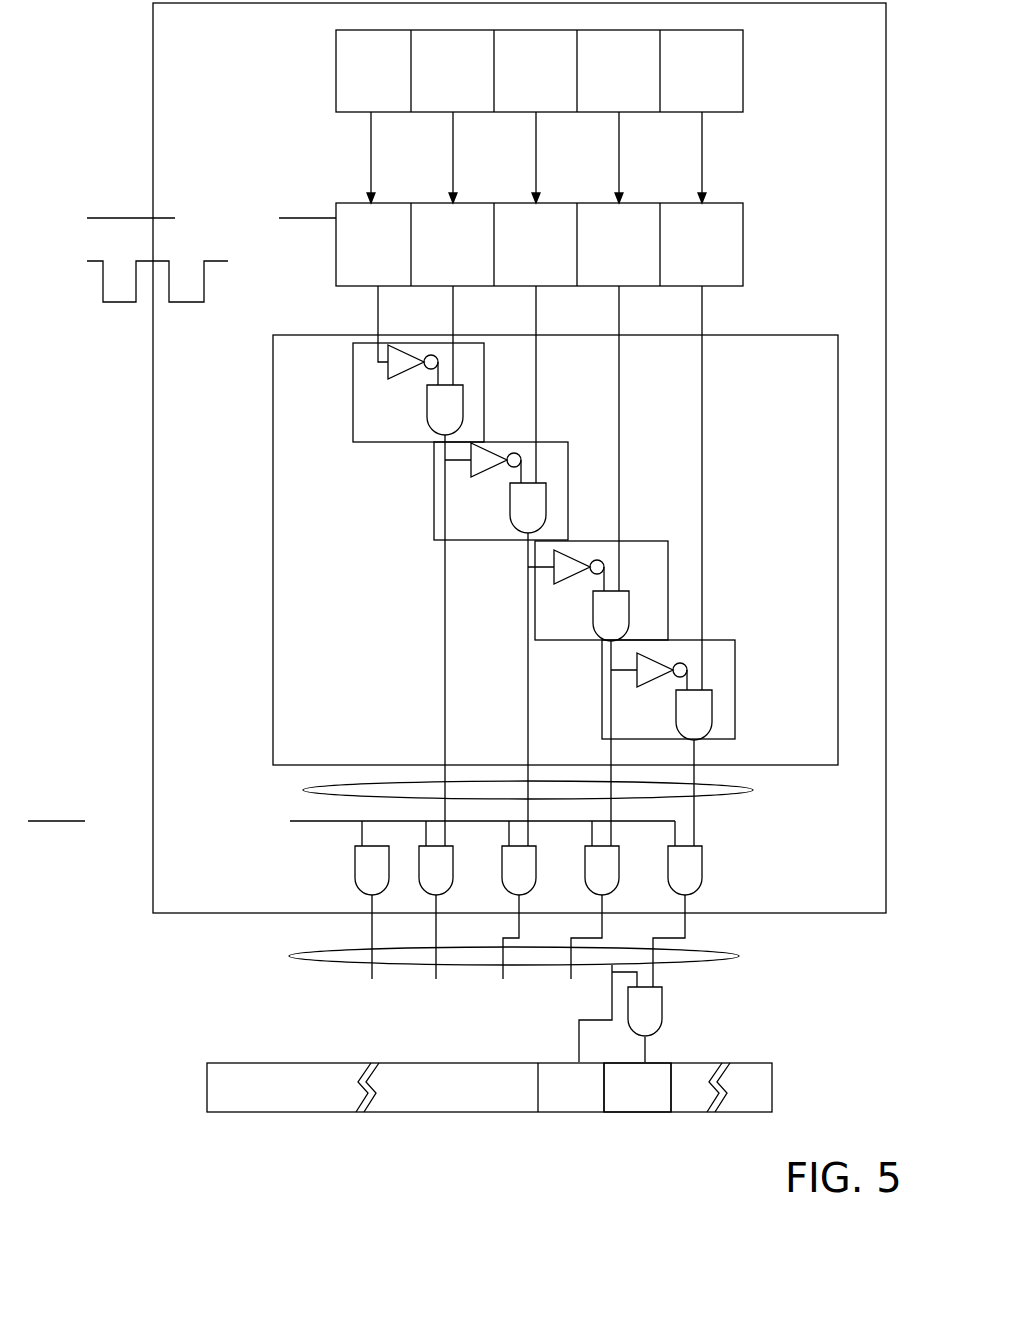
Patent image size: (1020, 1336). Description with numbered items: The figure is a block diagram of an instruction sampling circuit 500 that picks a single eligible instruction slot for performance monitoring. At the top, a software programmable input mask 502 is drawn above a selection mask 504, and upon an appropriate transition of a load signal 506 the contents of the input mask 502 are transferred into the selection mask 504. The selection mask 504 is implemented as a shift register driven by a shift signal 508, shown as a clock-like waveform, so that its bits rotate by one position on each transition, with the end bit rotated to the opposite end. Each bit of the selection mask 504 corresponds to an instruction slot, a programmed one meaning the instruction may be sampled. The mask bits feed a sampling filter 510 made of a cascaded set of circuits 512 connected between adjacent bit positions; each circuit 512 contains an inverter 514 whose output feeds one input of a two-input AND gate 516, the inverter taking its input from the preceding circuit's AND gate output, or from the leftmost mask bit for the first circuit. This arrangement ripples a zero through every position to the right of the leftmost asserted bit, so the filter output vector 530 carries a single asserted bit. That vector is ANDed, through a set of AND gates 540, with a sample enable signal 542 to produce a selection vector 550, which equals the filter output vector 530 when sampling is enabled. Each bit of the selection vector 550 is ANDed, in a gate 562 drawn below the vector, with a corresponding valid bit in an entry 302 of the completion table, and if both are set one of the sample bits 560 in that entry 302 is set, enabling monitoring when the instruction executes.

The sampling circuit 500 is at (857, 51).
The input mask 502 is at (298, 71).
The selection mask 504 is at (305, 200).
The load signal 506 is at (415, 244).
The shift signal 508 is at (205, 275).
The sampling filter 510 is at (822, 395).
The circuit 512 is at (520, 566).
The inverter 514 is at (402, 373).
The AND gate 516 is at (445, 403).
The filter output vector 530 is at (753, 790).
The AND gates 540 is at (296, 865).
The sample enable signal 542 is at (351, 821).
The selection vector 550 is at (740, 956).
The AND gate 562 is at (645, 1012).
The entry 302 is at (544, 1113).
The sample bits 560 is at (621, 1103).